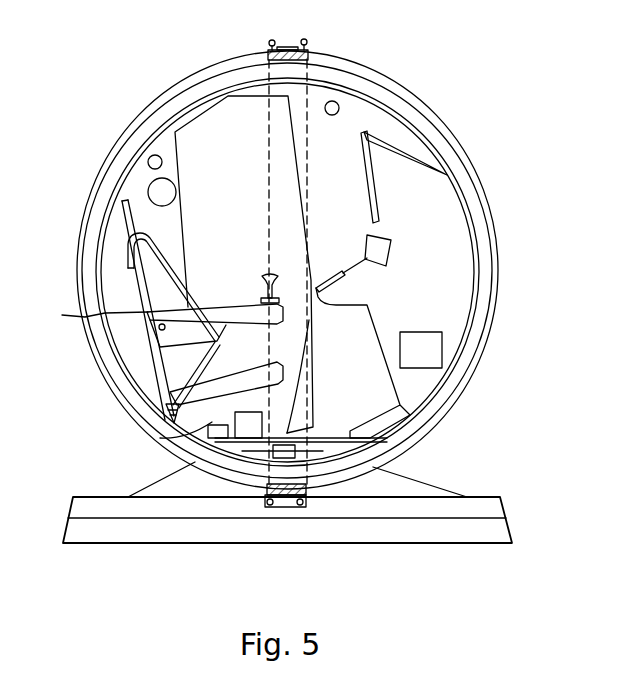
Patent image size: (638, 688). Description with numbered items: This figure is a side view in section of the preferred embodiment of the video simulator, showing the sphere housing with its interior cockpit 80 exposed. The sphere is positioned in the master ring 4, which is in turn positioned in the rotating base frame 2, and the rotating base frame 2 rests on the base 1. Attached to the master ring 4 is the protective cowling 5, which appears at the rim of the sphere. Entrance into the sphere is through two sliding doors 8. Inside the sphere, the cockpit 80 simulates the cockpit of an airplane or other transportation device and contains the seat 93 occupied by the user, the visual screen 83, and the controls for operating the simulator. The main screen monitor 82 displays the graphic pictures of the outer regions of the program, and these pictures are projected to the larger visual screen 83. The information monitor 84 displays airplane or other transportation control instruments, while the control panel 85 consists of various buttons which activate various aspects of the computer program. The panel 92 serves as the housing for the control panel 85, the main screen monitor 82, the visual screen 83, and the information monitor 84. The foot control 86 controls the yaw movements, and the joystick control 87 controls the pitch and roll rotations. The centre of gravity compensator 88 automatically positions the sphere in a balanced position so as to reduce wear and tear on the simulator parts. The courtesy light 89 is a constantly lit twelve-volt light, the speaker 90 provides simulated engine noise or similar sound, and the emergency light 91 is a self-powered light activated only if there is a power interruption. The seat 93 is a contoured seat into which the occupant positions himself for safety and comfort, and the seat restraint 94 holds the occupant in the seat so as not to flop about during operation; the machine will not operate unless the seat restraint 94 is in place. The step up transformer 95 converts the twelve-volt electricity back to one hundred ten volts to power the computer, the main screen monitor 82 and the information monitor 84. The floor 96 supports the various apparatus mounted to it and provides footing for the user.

The base 1 is at (513, 530).
The rotating base frame 2 is at (417, 487).
The master ring 4 is at (308, 42).
The protective cowling 5 is at (243, 56).
The sliding doors 8 is at (228, 146).
The cockpit 80 is at (104, 166).
The main screen monitor 82 is at (431, 364).
The visual screen 83 is at (374, 156).
The information monitor 84 is at (394, 250).
The control panel 85 is at (333, 278).
The foot control 86 is at (375, 415).
The joystick control 87 is at (262, 287).
The centre of gravity compensator 88 is at (310, 357).
The courtesy light 89 is at (163, 162).
The speaker 90 is at (176, 186).
The emergency light 91 is at (333, 115).
The panel 92 is at (420, 301).
The seat 93 is at (62, 315).
The seat restraint 94 is at (220, 342).
The step up transformer 95 is at (160, 438).
The floor 96 is at (310, 437).